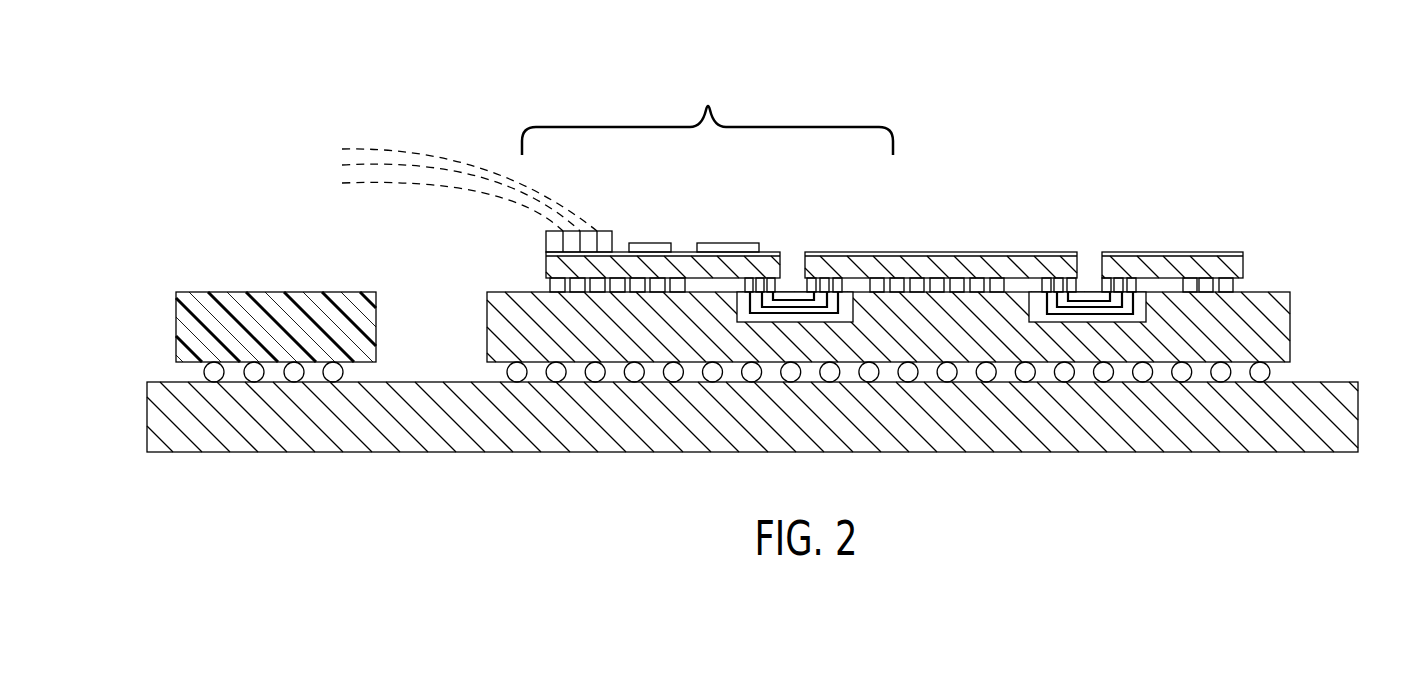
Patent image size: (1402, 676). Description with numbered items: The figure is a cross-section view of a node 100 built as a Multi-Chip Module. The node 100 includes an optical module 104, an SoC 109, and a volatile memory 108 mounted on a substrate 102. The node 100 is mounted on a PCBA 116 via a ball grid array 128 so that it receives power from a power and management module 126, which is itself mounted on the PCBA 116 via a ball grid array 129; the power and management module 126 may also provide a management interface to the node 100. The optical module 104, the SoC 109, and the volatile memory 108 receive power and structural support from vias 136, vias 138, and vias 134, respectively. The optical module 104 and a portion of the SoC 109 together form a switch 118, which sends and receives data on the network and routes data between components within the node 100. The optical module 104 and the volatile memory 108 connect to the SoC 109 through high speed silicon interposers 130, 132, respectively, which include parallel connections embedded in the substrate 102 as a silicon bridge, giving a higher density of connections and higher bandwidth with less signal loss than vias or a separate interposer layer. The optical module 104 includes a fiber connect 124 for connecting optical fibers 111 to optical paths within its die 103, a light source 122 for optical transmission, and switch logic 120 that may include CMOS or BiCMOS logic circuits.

The node 100 is at (984, 109).
The substrate 102 is at (1292, 332).
The die 103 is at (685, 252).
The optical module 104 is at (761, 233).
The volatile memory 108 is at (1155, 252).
The SoC 109 is at (877, 252).
The optical fibers 111 is at (431, 160).
The PCBA 116 is at (318, 453).
The switch 118 is at (707, 114).
The switch logic 120 is at (728, 243).
The light source 122 is at (650, 243).
The fiber connect 124 is at (545, 243).
The power and management module 126 is at (221, 291).
The ball grid array 128 is at (1282, 372).
The ball grid array 129 is at (186, 372).
The high speed silicon interposer 130 is at (786, 291).
The high speed silicon interposer 132 is at (1088, 291).
The vias 134 is at (1244, 283).
The vias 136 is at (538, 284).
The vias 138 is at (1008, 287).